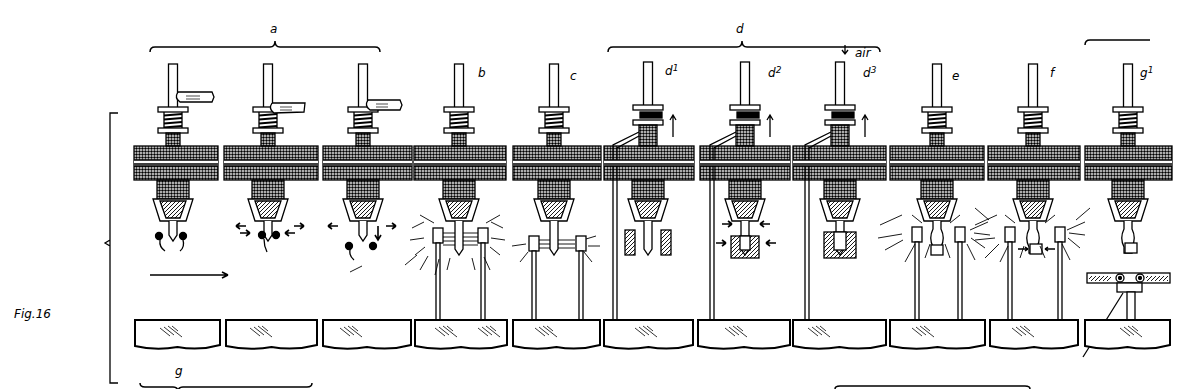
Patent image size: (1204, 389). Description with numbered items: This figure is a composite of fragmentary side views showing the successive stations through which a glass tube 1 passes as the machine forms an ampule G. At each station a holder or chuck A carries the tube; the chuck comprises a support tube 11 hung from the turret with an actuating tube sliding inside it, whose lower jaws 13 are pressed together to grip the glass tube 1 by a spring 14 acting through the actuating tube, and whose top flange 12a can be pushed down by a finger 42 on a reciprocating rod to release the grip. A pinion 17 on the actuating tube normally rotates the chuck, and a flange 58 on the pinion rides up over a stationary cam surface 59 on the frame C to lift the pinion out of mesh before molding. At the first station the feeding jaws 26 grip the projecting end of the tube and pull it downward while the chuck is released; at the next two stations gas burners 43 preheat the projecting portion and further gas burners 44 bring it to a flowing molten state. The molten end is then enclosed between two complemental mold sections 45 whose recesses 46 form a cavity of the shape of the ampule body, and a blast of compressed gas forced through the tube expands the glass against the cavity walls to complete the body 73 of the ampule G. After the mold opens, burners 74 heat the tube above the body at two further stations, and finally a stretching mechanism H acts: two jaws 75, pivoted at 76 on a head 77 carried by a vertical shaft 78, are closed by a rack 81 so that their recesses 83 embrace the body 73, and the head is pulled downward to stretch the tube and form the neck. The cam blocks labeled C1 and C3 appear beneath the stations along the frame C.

The glass tube 1 is at (180, 87).
The top flange 12a is at (166, 110).
The spring 14 is at (158, 118).
The flange 58 is at (186, 128).
The stationary cam surface 59 is at (634, 134).
The pinion 17 is at (613, 190).
The jaws 13 is at (216, 139).
The finger 42 is at (204, 90).
The holder or chuck A is at (149, 211).
The support tube 11 is at (190, 211).
The jaws 26 is at (182, 251).
The gas burners 43 is at (489, 224).
The gas burners 44 is at (488, 255).
The mold sections 45 is at (658, 273).
The recesses 46 is at (615, 250).
The body of the ampule 73 is at (850, 267).
The ampule G is at (820, 246).
The burners 74 is at (966, 220).
The jaws 75 is at (1086, 283).
The pivot 76 is at (1132, 276).
The recesses 83 is at (1090, 273).
The stretching mechanism H is at (1152, 267).
The head 77 is at (1119, 291).
The rack 81 is at (1118, 314).
The vertical shaft 78 is at (1083, 356).
The frame C is at (190, 318).
The cam block C1 is at (290, 320).
The cam block C3 is at (470, 348).